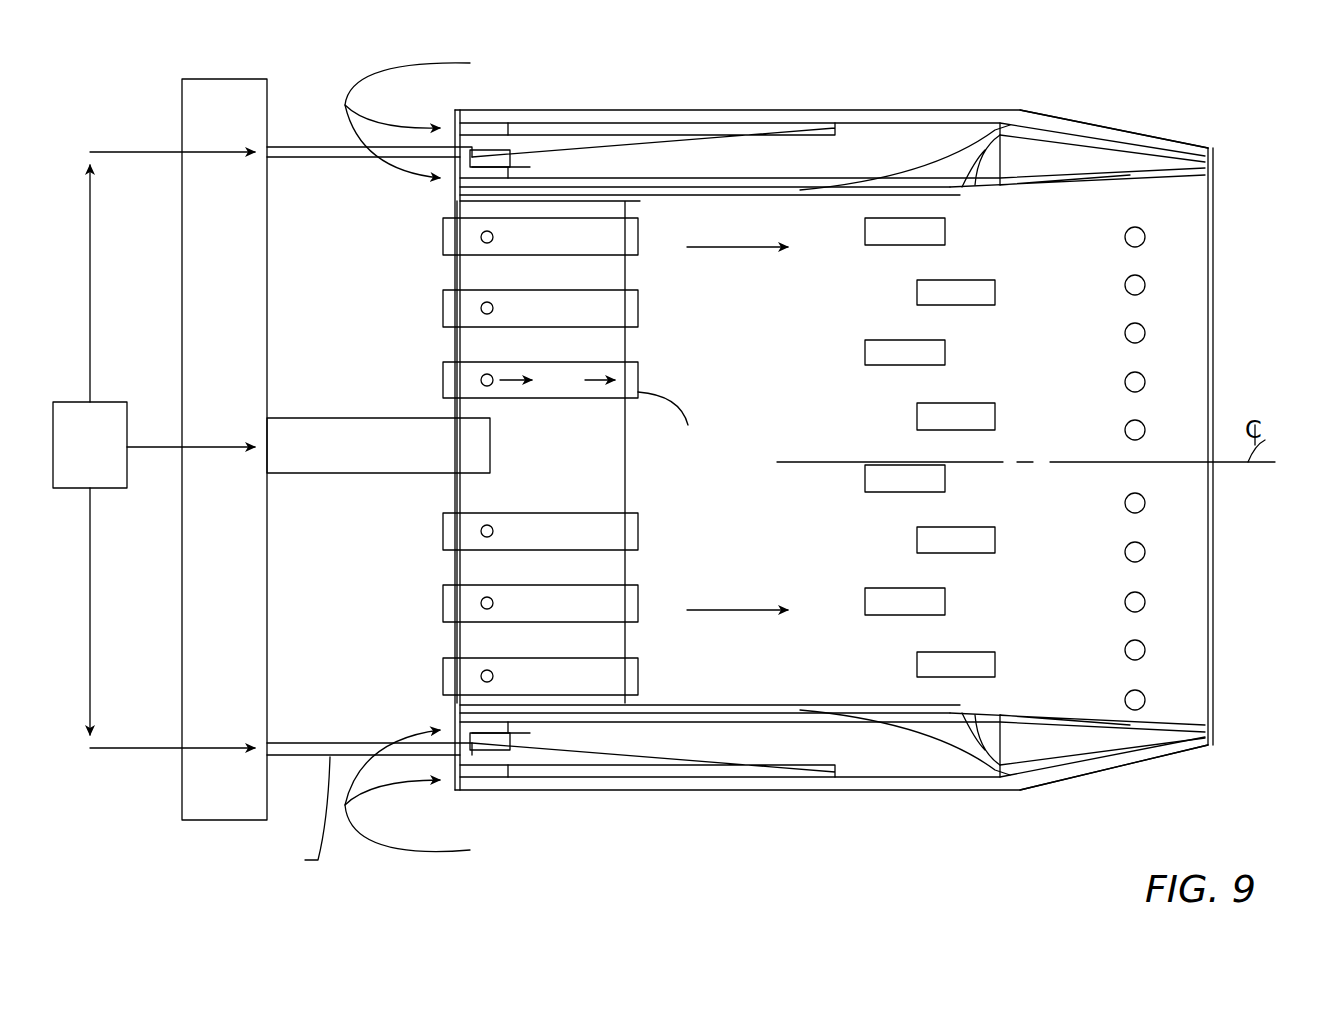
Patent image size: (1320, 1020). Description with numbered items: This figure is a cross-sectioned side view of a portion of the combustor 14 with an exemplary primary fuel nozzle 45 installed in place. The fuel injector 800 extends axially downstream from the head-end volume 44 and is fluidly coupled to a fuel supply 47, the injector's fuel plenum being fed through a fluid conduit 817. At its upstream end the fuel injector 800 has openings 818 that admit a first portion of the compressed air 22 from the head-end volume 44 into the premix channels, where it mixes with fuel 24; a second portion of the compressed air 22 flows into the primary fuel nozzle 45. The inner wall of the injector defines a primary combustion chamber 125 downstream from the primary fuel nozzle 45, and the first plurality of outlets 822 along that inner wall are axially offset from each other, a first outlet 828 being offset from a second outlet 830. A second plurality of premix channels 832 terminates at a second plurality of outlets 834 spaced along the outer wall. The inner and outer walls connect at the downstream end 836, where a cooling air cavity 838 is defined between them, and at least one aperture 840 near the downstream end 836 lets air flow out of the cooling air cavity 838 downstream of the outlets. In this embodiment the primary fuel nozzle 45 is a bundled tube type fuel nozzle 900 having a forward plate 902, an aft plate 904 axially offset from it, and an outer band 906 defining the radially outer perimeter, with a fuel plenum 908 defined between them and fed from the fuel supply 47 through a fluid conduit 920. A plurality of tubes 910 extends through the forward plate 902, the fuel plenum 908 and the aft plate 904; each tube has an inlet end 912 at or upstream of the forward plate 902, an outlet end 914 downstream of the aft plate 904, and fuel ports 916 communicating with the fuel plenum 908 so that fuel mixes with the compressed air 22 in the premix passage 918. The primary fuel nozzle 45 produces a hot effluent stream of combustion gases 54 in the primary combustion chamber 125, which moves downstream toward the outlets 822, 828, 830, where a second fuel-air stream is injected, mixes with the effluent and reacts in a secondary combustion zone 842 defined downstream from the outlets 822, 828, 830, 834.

The combustor 14 is at (1140, 58).
The compressed air 22 is at (410, 63).
The fuel 24 is at (90, 254).
The head-end volume 44 is at (250, 449).
The primary fuel nozzle 45 is at (440, 273).
The fuel supply 47 is at (90, 445).
The combustion gases 54 is at (728, 247).
The primary combustion chamber 125 is at (748, 448).
The fuel injector 800 is at (505, 70).
The fluid conduit 817 is at (294, 817).
The opening 818 is at (450, 182).
The first plurality of outlets 822 is at (1010, 290).
The first outlet 828 is at (879, 416).
The second outlet 830 is at (995, 418).
The second plurality of premix channels 832 is at (958, 185).
The second plurality of outlets 834 is at (920, 108).
The downstream end 836 is at (1215, 147).
The cooling air cavity 838 is at (1050, 160).
The aperture 840 is at (1130, 135).
The secondary combustion zone 842 is at (1103, 468).
The bundled tube type fuel nozzle 900 is at (640, 490).
The forward plate 902 is at (445, 568).
The aft plate 904 is at (625, 568).
The outer band 906 is at (590, 700).
The fuel plenum 908 is at (548, 452).
The tubes 910 is at (615, 358).
The inlet end 912 is at (440, 380).
The outlet end 914 is at (672, 417).
The fuel ports 916 is at (485, 362).
The premix passage 918 is at (557, 381).
The fluid conduit 920 is at (365, 473).